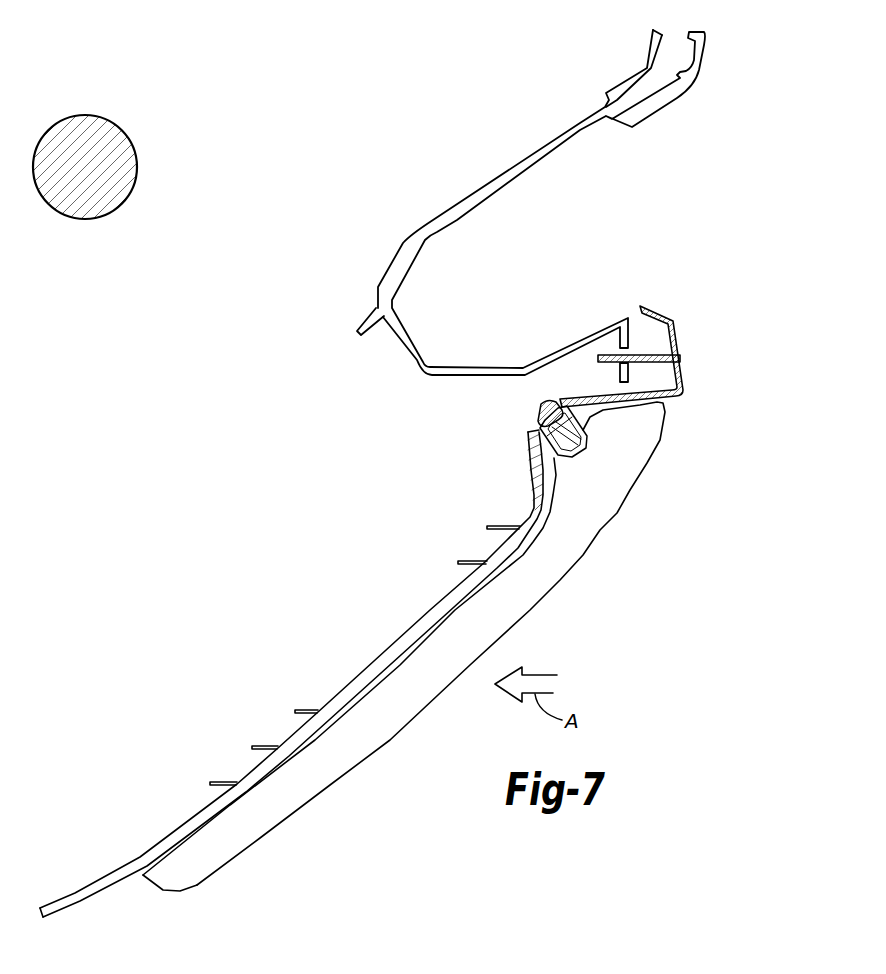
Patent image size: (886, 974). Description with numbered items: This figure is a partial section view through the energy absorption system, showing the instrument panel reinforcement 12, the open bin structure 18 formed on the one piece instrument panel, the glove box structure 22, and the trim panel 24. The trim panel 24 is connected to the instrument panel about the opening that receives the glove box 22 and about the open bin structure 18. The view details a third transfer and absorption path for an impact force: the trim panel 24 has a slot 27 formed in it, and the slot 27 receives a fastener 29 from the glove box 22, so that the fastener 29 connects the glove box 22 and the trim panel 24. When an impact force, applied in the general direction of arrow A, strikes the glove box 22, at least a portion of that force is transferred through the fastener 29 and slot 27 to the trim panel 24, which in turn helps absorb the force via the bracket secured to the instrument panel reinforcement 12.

The instrument panel reinforcement 12 is at (118, 127).
The open bin structure 18 is at (471, 298).
The glove box structure 22 is at (618, 513).
The trim panel 24 is at (684, 336).
The slot 27 is at (540, 428).
The fastener 29 is at (540, 412).